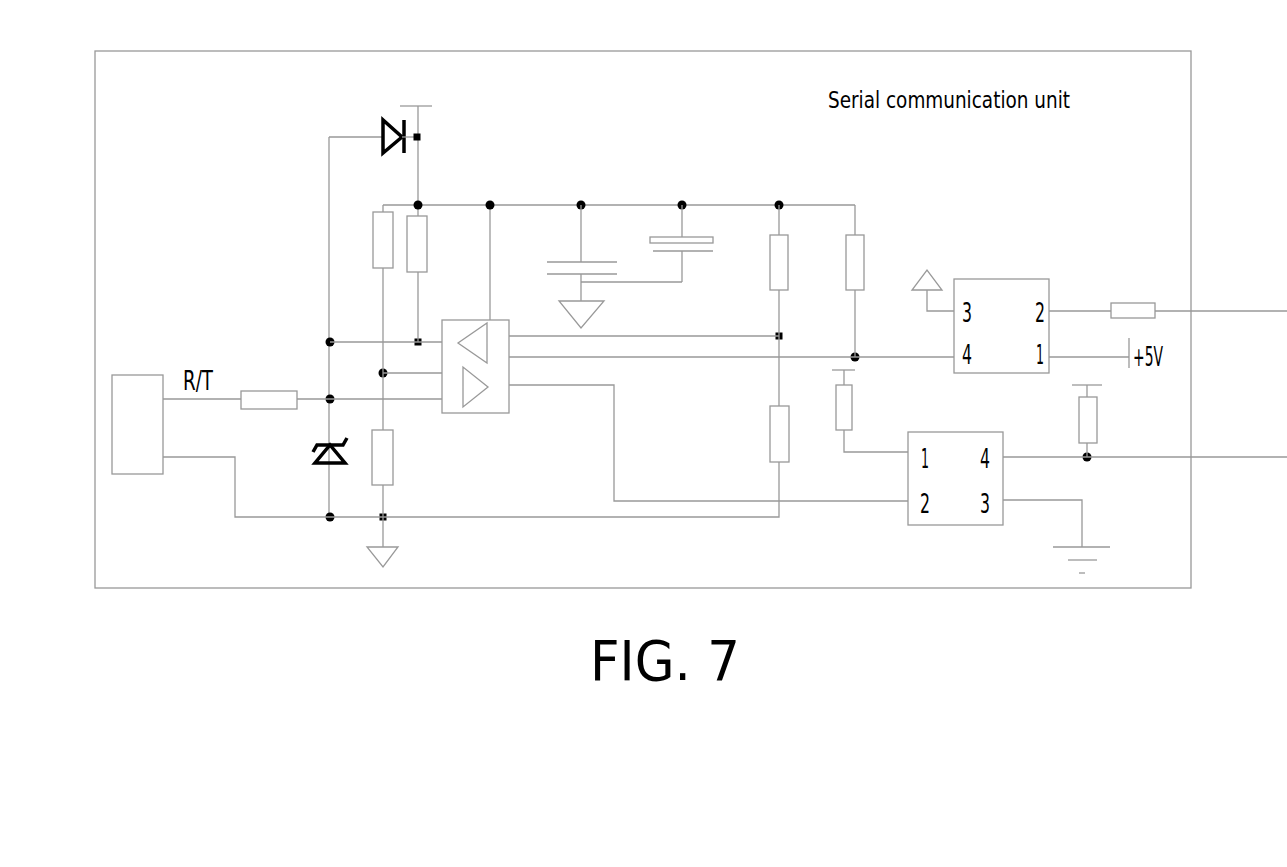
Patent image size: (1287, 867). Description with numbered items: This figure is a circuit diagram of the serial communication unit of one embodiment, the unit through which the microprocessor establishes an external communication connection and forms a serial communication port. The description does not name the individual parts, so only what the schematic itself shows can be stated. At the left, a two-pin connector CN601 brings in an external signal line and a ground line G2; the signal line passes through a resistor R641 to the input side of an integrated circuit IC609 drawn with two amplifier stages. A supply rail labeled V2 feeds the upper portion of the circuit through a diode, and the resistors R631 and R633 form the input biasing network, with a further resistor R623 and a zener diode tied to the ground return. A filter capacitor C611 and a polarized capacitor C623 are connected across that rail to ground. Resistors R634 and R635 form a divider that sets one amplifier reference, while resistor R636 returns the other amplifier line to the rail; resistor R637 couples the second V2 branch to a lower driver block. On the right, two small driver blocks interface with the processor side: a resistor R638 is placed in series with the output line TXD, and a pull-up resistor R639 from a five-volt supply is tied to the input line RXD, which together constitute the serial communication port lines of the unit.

The connector CN601 is at (137, 407).
The resistor R641 is at (302, 383).
The resistor R631 is at (363, 240).
The resistor R633 is at (439, 244).
The resistor R623 is at (404, 457).
The comparator / operational amplifier IC IC609 is at (504, 378).
The capacitor C611 is at (564, 266).
The electrolytic capacitor C623 is at (704, 243).
The resistor R634 is at (800, 305).
The resistor R635 is at (758, 434).
The resistor R636 is at (876, 281).
The resistor R637 is at (872, 418).
The resistor R638 is at (1168, 294).
The resistor R639 is at (1088, 419).
The supply voltage V2 is at (627, 232).
The ground terminal G2 is at (471, 472).
The transmit data line TXD is at (1243, 292).
The receive data line RXD is at (1246, 434).